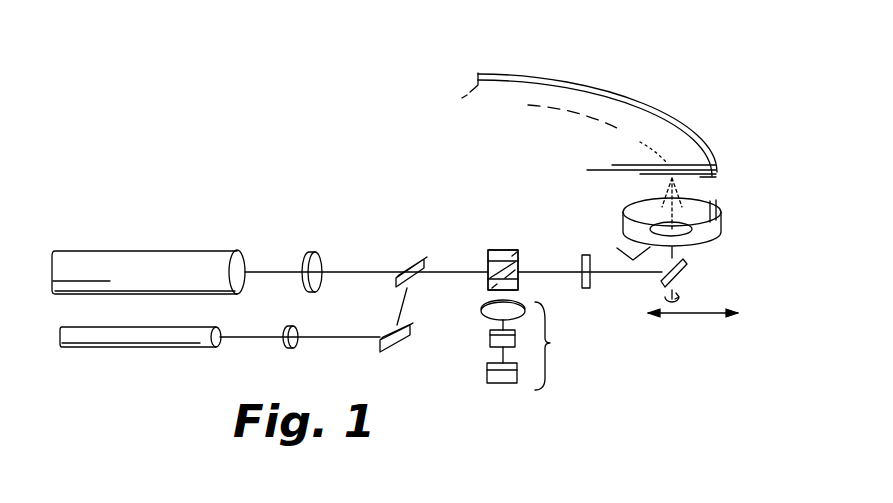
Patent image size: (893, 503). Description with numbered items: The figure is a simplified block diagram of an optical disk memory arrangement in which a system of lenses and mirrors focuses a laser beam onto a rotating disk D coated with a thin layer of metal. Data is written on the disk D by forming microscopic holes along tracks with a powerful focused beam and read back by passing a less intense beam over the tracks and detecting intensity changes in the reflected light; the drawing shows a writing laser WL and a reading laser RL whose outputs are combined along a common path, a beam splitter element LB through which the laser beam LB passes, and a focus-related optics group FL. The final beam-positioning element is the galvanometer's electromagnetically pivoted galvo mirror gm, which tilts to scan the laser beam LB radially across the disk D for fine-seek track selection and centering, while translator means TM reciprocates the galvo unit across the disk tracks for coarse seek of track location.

The writing laser WL is at (112, 248).
The reading laser RL is at (123, 348).
The laser beam LB is at (542, 272).
The focus detection optics FL is at (535, 345).
The galvo mirror gm is at (690, 268).
The translator means TM is at (700, 318).
The disk D is at (616, 84).